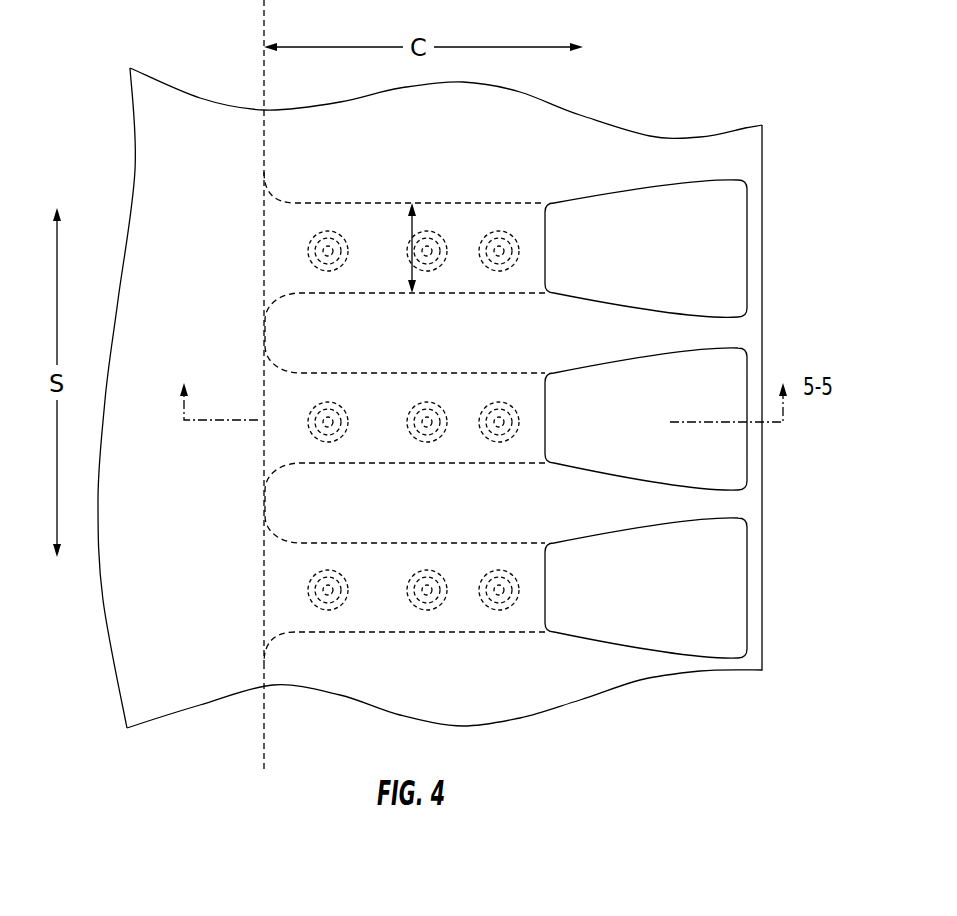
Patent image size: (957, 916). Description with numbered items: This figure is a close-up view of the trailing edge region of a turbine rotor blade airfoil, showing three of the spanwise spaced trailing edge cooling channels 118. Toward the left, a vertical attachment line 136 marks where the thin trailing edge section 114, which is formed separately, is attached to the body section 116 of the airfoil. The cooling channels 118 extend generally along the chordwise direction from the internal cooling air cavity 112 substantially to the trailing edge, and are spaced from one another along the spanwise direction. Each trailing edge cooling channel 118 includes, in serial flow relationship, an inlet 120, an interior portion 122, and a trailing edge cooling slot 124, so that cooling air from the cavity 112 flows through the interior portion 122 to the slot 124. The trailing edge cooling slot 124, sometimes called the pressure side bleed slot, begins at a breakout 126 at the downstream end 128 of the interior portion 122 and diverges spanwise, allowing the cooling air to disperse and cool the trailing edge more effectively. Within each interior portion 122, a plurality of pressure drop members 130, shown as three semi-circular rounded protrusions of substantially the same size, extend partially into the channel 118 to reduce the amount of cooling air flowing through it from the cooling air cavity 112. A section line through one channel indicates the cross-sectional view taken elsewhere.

The cooling air cavity 112 is at (163, 196).
The trailing edge section 114 is at (577, 728).
The body section 116 is at (187, 730).
The trailing edge cooling channel 118 is at (525, 196).
The inlet 120 is at (253, 213).
The interior portion 122 is at (385, 198).
The trailing edge cooling slot 124 is at (725, 240).
The breakout 126 is at (573, 278).
The downstream end 128 is at (558, 218).
The pressure drop member 130 is at (329, 231).
The attachment line 136 is at (264, 756).